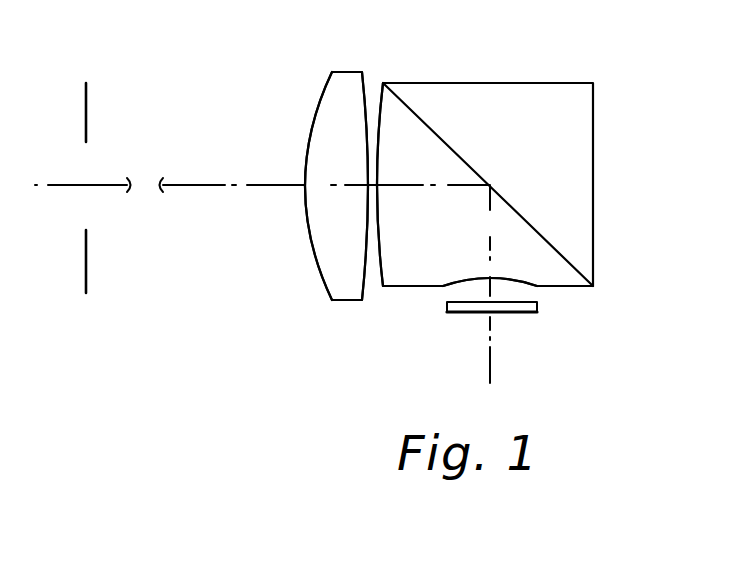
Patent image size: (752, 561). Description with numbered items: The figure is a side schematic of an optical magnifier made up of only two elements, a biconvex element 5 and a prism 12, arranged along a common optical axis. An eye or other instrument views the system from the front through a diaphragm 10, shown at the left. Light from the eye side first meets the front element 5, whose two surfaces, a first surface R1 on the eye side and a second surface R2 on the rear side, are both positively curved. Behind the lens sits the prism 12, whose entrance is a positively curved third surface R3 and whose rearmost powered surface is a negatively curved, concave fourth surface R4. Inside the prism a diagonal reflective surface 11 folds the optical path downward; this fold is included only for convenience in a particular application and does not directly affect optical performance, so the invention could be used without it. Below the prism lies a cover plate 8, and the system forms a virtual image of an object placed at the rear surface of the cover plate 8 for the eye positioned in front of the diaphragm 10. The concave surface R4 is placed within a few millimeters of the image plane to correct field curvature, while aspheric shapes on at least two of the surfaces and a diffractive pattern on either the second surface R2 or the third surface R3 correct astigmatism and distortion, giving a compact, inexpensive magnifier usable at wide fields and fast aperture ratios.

The diaphragm 10 is at (86, 89).
The biconvex element 5 is at (315, 253).
The first surface R1 is at (315, 113).
The second surface R2 is at (367, 85).
The third surface R3 is at (384, 278).
The fourth surface R4 is at (505, 278).
The reflective surface 11 is at (473, 168).
The prism 12 is at (590, 137).
The cover plate 8 is at (533, 313).